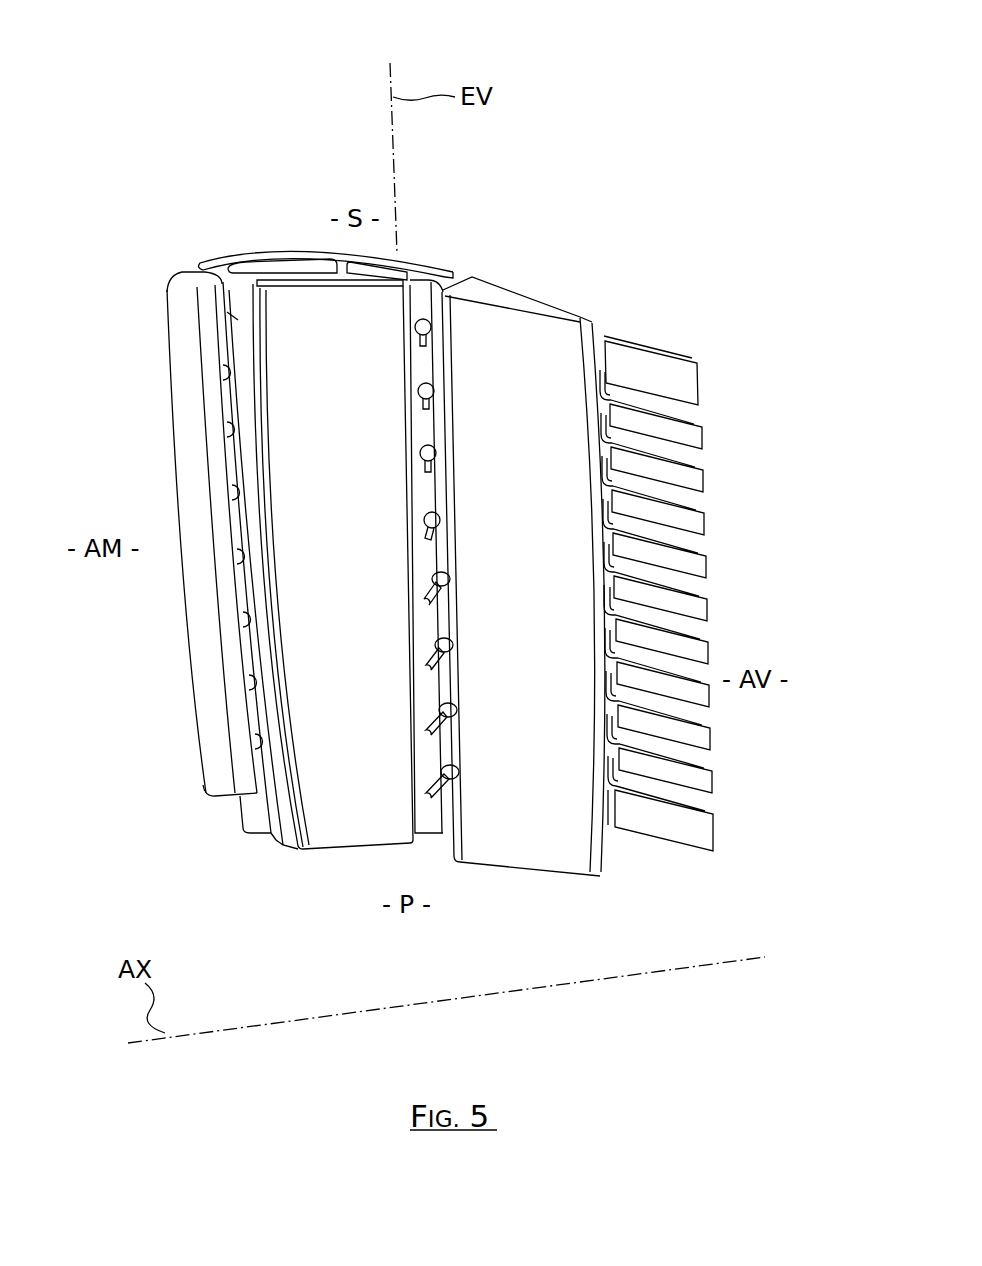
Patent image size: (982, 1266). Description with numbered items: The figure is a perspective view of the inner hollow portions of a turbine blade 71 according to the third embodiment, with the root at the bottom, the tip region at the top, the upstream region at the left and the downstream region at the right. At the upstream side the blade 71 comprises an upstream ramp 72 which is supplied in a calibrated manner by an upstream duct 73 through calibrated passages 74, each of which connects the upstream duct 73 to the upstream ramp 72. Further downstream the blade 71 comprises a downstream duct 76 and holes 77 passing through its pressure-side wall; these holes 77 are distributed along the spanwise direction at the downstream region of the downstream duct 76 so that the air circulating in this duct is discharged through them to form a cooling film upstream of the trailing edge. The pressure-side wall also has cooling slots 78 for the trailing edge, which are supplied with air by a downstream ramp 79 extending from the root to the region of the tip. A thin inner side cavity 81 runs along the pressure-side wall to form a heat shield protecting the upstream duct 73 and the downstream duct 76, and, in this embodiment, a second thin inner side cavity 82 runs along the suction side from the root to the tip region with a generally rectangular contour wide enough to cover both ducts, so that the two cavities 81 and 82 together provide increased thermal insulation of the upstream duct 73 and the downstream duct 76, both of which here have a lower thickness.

The blade 71 is at (155, 247).
The upstream ramp 72 is at (207, 463).
The upstream duct 73 is at (283, 273).
The calibrated passages 74 is at (250, 623).
The downstream duct 76 is at (409, 280).
The holes 77 is at (447, 648).
The cooling slots 78 is at (605, 500).
The downstream ramp 79 is at (525, 576).
The inner side cavity 81 is at (333, 564).
The second inner side cavity 82 is at (300, 258).